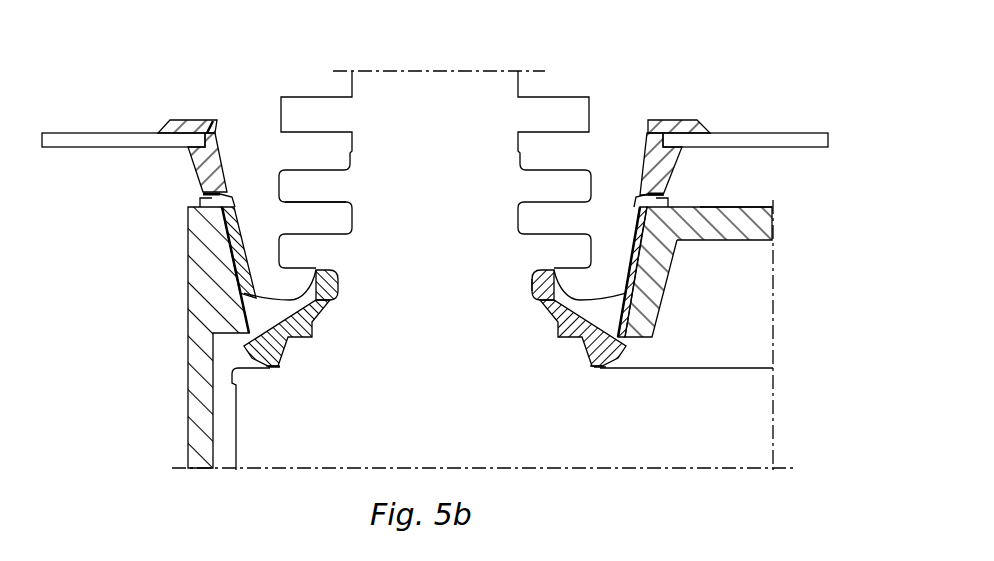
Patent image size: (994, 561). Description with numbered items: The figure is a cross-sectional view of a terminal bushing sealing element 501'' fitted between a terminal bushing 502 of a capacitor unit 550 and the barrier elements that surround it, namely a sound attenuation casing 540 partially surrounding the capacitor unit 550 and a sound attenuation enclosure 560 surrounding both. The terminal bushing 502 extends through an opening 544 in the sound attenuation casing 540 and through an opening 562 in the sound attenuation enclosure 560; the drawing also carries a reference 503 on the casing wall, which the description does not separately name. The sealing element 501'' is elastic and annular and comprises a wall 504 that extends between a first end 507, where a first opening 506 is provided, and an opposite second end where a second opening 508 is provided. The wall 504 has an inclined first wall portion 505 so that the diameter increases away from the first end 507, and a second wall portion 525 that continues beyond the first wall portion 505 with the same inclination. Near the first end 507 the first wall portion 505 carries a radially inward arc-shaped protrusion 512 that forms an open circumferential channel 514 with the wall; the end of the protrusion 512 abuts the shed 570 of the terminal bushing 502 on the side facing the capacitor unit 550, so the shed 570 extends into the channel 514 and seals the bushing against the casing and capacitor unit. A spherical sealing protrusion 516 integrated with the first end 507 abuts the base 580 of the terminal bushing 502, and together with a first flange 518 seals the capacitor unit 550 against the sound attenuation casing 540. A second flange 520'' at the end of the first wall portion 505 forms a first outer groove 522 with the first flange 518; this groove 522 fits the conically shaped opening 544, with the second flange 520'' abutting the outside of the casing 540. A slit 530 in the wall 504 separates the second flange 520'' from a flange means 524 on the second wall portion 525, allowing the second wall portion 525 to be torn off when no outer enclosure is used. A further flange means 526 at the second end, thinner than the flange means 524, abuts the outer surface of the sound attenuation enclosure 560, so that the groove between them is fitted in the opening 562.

The terminal bushing sealing element 501'' is at (692, 55).
The terminal bushing 502 is at (446, 112).
The housing wall 503 is at (762, 220).
The wall 504 is at (220, 138).
The first wall portion 505 is at (220, 250).
The first opening 506 is at (481, 352).
The first end 507 is at (272, 370).
The second opening 508 is at (391, 113).
The protrusion 512 is at (333, 283).
The channel 514 is at (590, 297).
The spherical sealing protrusion 516 is at (278, 358).
The first flange 518 is at (600, 364).
The second flange 520'' is at (184, 263).
The first outer groove 522 is at (637, 297).
The flange means 524 is at (665, 167).
The second wall portion 525 is at (652, 136).
The flange means 526 is at (190, 118).
The slit 530 is at (667, 181).
The sound attenuation casing 540 is at (745, 213).
The opening 544 is at (648, 262).
The capacitor unit 550 is at (414, 409).
The sound attenuation enclosure 560 is at (745, 133).
The opening 562 is at (205, 128).
The shed 570 is at (315, 246).
The base 580 is at (584, 356).